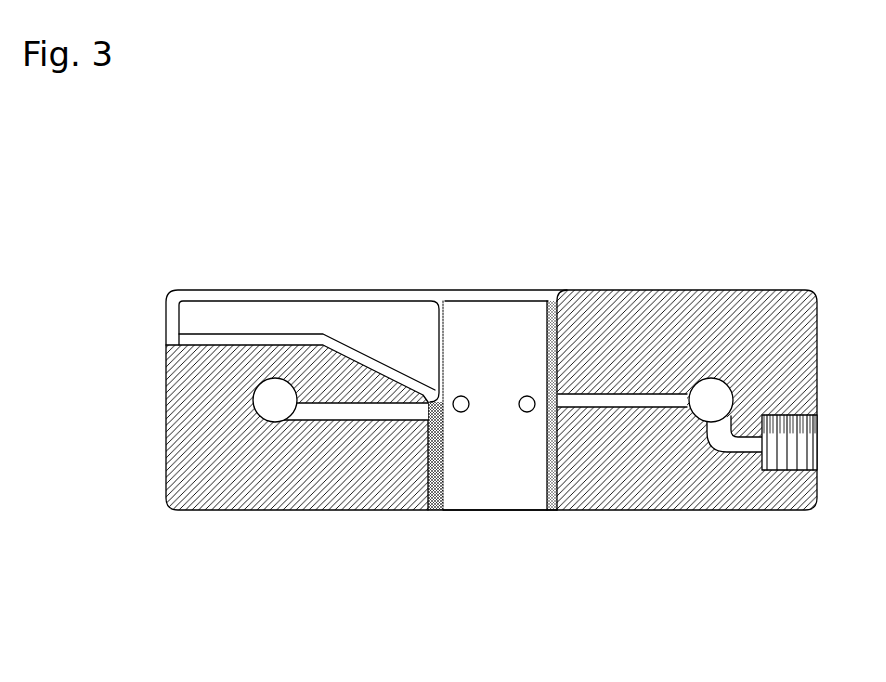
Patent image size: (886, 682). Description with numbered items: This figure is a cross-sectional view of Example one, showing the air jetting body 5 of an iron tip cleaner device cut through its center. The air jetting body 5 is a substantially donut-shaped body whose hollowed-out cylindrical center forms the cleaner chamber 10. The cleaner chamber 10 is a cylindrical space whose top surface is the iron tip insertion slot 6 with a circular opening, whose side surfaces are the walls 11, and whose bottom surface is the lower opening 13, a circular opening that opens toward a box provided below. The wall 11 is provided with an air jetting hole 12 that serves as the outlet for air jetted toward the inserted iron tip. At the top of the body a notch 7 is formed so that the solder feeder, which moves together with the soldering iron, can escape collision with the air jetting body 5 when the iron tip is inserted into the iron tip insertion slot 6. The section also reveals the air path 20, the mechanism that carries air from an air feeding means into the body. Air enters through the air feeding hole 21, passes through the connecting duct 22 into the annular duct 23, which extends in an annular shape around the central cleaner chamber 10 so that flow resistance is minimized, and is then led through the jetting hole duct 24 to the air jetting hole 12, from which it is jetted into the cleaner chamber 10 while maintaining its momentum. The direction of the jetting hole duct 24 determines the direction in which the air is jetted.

The air jetting body 5 is at (683, 512).
The iron tip insertion slot 6 is at (522, 300).
The notch 7 is at (223, 317).
The cleaner chamber 10 is at (568, 186).
The wall 11 is at (488, 323).
The air jetting hole 12 is at (460, 396).
The lower opening 13 is at (523, 510).
The air path 20 is at (837, 186).
The air feeding hole 21 is at (820, 438).
The connecting duct 22 is at (748, 440).
The annular duct 23 is at (265, 416).
The jetting hole duct 24 is at (368, 410).